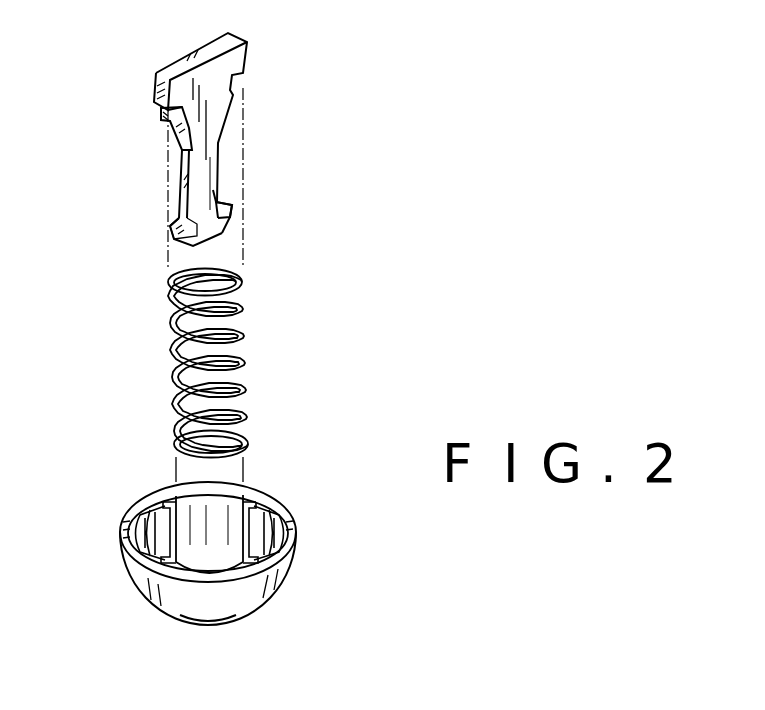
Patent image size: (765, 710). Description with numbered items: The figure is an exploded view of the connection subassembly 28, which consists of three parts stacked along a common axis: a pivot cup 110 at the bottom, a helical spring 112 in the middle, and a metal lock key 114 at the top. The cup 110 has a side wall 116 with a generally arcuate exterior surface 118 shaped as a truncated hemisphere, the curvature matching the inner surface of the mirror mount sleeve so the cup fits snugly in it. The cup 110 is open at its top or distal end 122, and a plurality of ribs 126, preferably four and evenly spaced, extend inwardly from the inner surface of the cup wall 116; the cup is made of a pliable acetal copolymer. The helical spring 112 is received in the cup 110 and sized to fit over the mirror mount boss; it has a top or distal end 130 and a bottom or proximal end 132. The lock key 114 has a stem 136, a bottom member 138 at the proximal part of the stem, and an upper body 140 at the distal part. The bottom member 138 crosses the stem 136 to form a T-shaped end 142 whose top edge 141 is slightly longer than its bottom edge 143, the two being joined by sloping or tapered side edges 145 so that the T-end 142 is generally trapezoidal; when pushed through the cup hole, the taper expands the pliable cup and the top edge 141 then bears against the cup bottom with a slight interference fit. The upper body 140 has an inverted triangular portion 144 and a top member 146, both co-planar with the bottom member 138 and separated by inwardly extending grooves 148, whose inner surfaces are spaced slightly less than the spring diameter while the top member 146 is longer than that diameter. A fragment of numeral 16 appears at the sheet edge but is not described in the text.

The upper body 140 is at (267, 45).
The top member 146 is at (153, 88).
The grooves 148 is at (231, 79).
The inverted triangular portion 144 is at (223, 115).
The lock key 114 is at (239, 157).
The stem 136 is at (230, 180).
The bottom member 138 is at (230, 217).
The bottom edge 143 is at (222, 240).
The T-shaped end 142 is at (150, 226).
The top edge 141 is at (168, 229).
The tapered side edges 145 is at (173, 236).
The distal end 130 is at (240, 275).
The connection subassembly 28 is at (311, 314).
The helical spring 112 is at (260, 362).
The proximal end 132 is at (243, 450).
The pivot cup 110 is at (292, 480).
The distal end 122 is at (285, 513).
The ribs 126 is at (142, 520).
The side wall 116 is at (123, 586).
The exterior surface 118 is at (197, 600).
The housing 16 is at (680, 708).